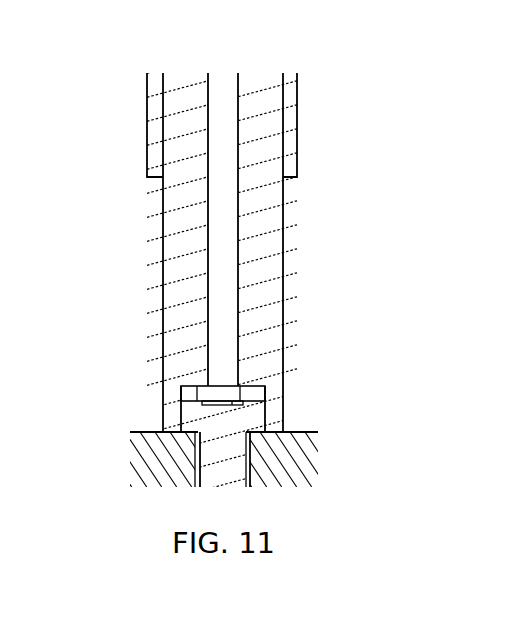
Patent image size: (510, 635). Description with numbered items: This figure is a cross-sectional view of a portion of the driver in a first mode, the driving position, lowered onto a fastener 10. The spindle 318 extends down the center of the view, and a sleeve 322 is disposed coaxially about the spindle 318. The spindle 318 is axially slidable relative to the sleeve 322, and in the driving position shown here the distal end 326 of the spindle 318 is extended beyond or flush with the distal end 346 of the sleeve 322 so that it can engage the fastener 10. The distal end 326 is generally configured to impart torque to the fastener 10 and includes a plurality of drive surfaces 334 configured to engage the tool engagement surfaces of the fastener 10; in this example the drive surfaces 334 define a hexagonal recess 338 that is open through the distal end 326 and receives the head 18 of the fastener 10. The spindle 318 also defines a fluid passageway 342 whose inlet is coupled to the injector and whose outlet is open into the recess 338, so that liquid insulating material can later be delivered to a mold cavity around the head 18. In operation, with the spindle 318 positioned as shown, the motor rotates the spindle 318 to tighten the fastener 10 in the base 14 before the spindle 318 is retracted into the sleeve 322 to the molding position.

The fastener 10 is at (210, 455).
The base 14 is at (298, 430).
The head 18 is at (195, 413).
The spindle 318 is at (175, 246).
The sleeve 322 is at (156, 112).
The distal end 326 is at (270, 433).
The drive surfaces 334 is at (183, 392).
The hexagonal recess 338 is at (202, 375).
The fluid passageway 342 is at (238, 281).
The distal end of the sleeve 346 is at (285, 177).